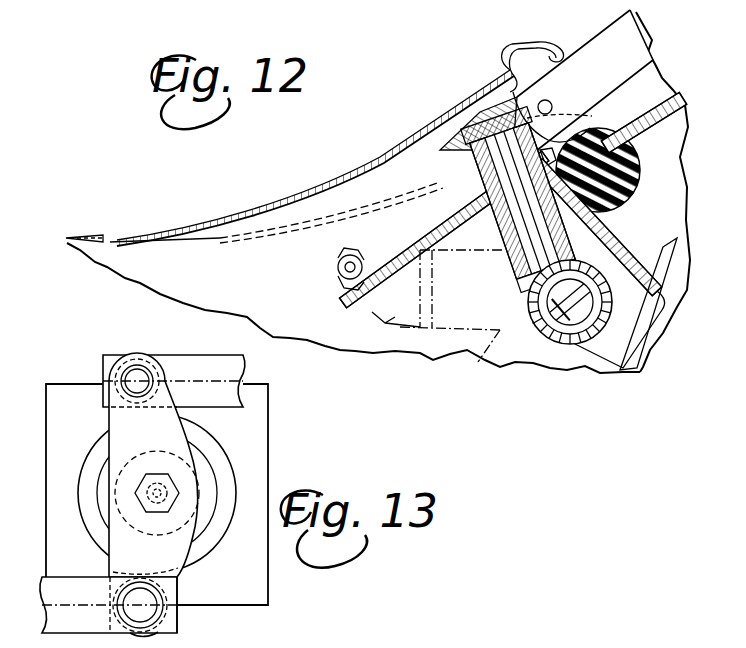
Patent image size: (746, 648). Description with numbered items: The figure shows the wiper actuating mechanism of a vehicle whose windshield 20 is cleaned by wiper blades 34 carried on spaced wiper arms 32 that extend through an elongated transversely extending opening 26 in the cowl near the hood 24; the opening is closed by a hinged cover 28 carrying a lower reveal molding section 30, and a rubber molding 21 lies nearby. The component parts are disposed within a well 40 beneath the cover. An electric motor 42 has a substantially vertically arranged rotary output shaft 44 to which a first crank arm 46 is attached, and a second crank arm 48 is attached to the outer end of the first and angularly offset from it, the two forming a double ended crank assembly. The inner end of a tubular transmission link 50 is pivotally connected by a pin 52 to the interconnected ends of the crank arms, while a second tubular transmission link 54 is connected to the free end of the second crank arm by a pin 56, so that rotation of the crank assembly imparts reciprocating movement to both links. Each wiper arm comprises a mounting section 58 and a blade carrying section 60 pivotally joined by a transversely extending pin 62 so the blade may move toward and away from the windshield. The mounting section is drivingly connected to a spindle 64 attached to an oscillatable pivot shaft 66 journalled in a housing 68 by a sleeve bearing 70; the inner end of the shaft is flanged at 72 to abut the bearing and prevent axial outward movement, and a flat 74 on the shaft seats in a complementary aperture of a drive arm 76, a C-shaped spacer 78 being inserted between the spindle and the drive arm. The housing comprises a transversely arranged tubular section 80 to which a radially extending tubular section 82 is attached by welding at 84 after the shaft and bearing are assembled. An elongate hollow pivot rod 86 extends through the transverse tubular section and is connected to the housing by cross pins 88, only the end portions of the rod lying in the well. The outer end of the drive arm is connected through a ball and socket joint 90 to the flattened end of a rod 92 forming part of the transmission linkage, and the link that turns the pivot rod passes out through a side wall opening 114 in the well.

In FIG. 12, the windshield 20 is at (687, 107).
In FIG. 12, the rubber molding 21 is at (633, 164).
In FIG. 12, the hood 24 is at (75, 236).
In FIG. 13, the opening 26 is at (733, 640).
In FIG. 12, the cover 28 is at (298, 199).
In FIG. 13, the cover 28 is at (540, 640).
In FIG. 12, the lower reveal molding section 30 is at (543, 45).
In FIG. 12, the wiper arms 32 is at (600, 42).
In FIG. 13, the wiper blades 34 is at (323, 640).
In FIG. 12, the well 40 is at (182, 248).
In FIG. 13, the electric motor 42 is at (262, 598).
In FIG. 13, the rotary output shaft 44 is at (157, 482).
In FIG. 13, the first crank arm 46 is at (117, 422).
In FIG. 13, the second crank arm 48 is at (113, 571).
In FIG. 13, the tubular transmission link 50 is at (237, 366).
In FIG. 13, the pin 52 is at (127, 379).
In FIG. 13, the second tubular transmission link 54 is at (108, 612).
In FIG. 13, the pin 56 is at (150, 602).
In FIG. 12, the mounting section 58 is at (440, 157).
In FIG. 12, the blade carrying section 60 is at (647, 33).
In FIG. 12, the pin 62 is at (549, 102).
In FIG. 12, the spindle 64 is at (425, 185).
In FIG. 12, the pivot shaft 66 is at (521, 232).
In FIG. 12, the housing 68 is at (441, 272).
In FIG. 12, the sleeve bearing 70 is at (528, 252).
In FIG. 12, the flange 72 is at (574, 250).
In FIG. 12, the flat 74 is at (543, 163).
In FIG. 12, the drive arm 76 is at (342, 306).
In FIG. 12, the C-shaped spacer 78 is at (446, 217).
In FIG. 12, the tubular section 80 is at (562, 338).
In FIG. 12, the tubular section 82 is at (516, 265).
In FIG. 12, the welding 84 is at (523, 333).
In FIG. 12, the pivot rod 86 is at (572, 322).
In FIG. 12, the cross pins 88 is at (582, 334).
In FIG. 12, the ball and socket joint 90 is at (337, 268).
In FIG. 12, the rod 92 is at (342, 283).
In FIG. 12, the side wall opening 114 is at (624, 366).